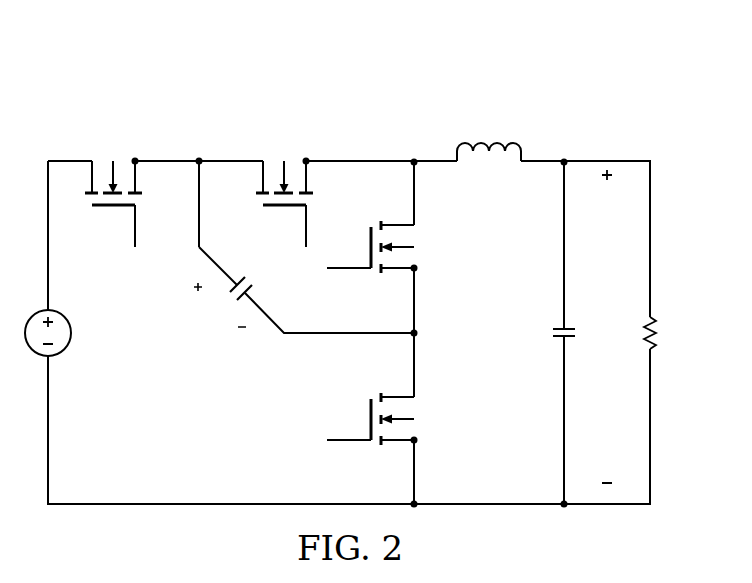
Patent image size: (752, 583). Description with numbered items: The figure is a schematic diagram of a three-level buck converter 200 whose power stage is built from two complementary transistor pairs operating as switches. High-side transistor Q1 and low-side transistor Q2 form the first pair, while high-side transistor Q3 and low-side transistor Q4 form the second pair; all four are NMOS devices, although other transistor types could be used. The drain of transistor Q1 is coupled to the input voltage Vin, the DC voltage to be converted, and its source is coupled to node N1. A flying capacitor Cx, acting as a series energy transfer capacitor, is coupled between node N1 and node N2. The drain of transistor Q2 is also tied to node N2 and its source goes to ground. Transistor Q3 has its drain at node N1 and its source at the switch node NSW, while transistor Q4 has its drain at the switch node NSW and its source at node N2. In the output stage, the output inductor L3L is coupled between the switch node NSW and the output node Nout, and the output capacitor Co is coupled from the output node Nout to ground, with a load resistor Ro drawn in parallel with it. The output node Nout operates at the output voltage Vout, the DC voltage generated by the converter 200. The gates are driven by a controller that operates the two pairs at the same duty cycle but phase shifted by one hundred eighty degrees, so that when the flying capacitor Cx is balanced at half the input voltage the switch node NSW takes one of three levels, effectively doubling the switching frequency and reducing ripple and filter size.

The three-level buck converter 200 is at (259, 80).
The high-side transistor Q1 is at (113, 187).
The high-side transistor Q3 is at (284, 187).
The low-side transistor Q4 is at (388, 247).
The low-side transistor Q2 is at (389, 419).
The node N1 is at (202, 186).
The node N2 is at (431, 341).
The switch node NSW is at (412, 143).
The output node Nout is at (556, 143).
The flying capacitor Cx is at (304, 290).
The output inductor L3L is at (489, 134).
The output capacitor Co is at (581, 332).
The load resistor Ro is at (666, 337).
The input voltage Vin is at (66, 333).
The output voltage Vout is at (596, 254).